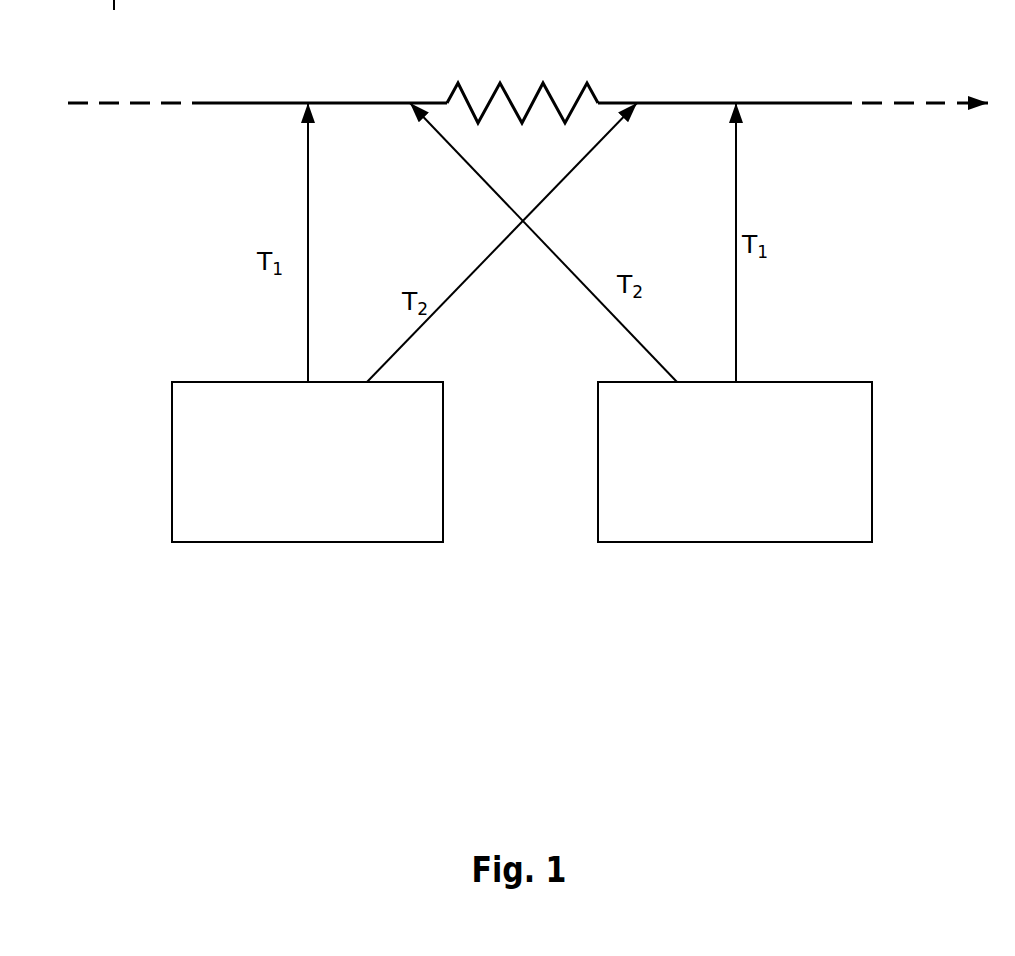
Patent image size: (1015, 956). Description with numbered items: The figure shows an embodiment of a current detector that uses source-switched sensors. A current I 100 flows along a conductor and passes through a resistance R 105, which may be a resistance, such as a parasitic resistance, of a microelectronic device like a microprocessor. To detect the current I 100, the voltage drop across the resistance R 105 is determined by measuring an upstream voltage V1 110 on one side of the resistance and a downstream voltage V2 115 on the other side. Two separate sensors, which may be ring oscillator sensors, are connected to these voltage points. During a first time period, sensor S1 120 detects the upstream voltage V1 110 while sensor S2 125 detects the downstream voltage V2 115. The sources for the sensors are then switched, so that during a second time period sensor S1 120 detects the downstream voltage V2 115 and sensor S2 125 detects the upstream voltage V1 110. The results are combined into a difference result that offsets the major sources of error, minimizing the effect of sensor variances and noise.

The current I 100 is at (55, 63).
The resistance R 105 is at (522, 66).
The upstream voltage V1 110 is at (458, 196).
The downstream voltage V2 115 is at (587, 196).
The sensor S1 120 is at (385, 531).
The sensor S2 125 is at (854, 531).